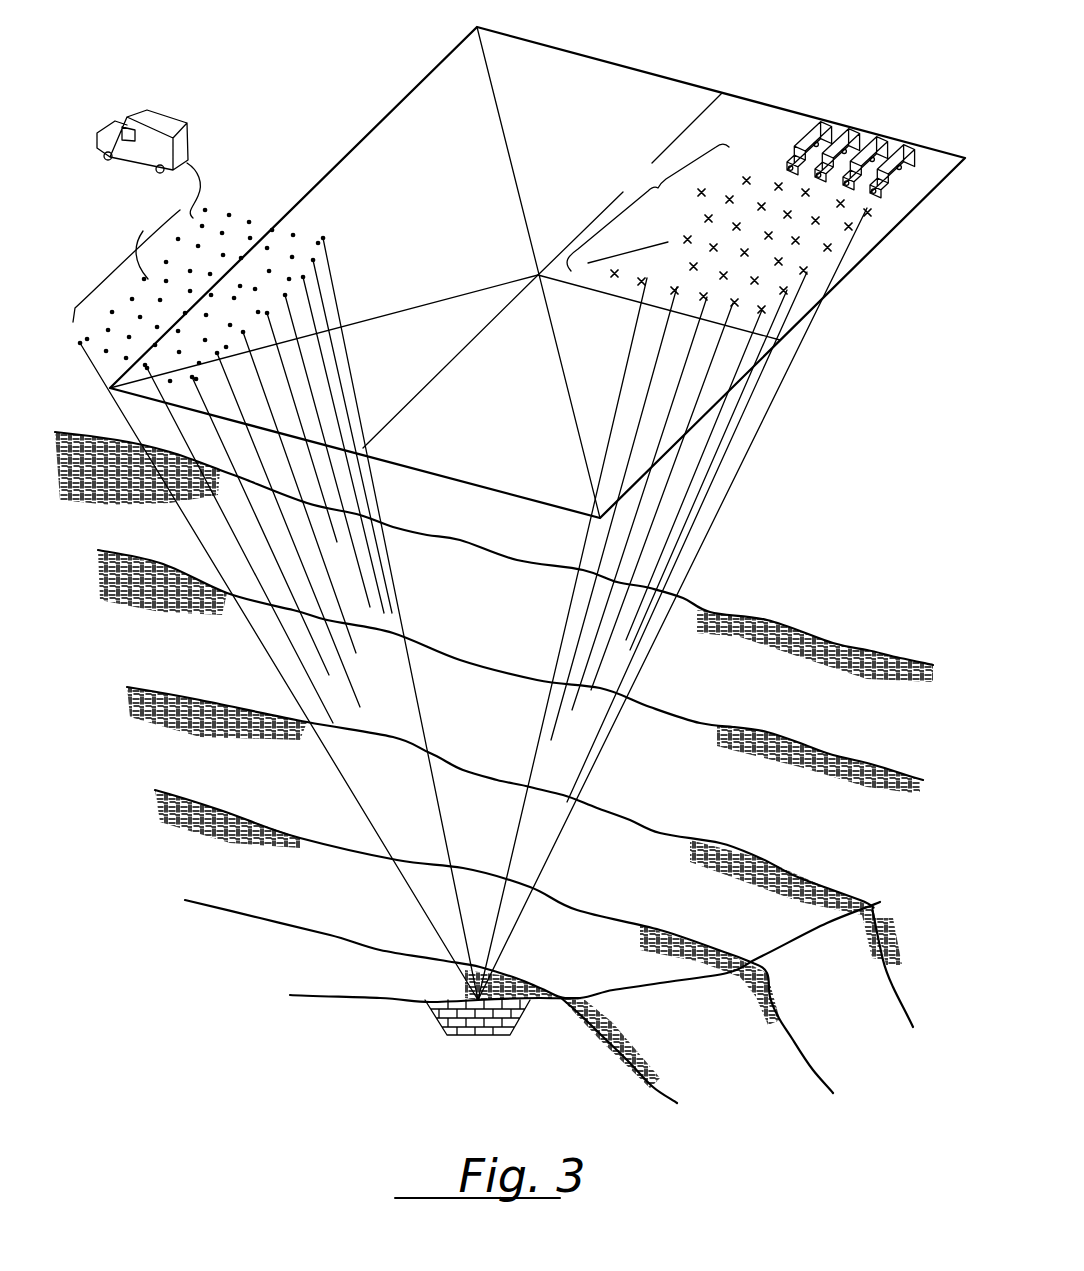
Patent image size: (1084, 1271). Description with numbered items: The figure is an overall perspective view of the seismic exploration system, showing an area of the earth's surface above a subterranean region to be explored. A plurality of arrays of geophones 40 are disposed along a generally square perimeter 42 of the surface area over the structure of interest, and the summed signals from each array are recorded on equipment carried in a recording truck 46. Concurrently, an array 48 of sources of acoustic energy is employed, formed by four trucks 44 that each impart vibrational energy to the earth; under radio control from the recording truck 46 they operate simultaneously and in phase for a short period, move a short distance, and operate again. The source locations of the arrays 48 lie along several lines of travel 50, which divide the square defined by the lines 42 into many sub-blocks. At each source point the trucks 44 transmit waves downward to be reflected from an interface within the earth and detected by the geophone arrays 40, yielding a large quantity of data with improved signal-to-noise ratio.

The arrays of geophones 40 is at (224, 214).
The square perimeter 42 is at (406, 96).
The trucks 44 is at (900, 152).
The recording truck 46 is at (157, 126).
The array of sources of acoustic energy 48 is at (674, 546).
The lines of travel 50 is at (451, 368).